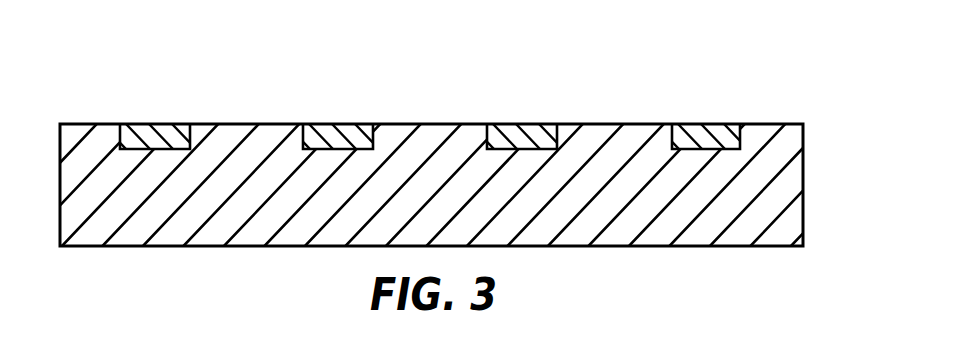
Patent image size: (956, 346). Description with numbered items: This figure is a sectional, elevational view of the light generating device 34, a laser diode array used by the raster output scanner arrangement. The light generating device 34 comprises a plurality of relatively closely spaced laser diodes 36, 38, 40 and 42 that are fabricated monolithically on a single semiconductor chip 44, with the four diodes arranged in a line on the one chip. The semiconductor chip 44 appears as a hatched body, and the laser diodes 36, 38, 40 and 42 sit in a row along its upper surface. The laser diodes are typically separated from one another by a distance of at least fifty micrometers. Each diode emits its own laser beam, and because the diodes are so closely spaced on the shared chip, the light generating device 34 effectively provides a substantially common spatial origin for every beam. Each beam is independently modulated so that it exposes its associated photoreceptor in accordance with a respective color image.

The light generating device 34 is at (483, 50).
The laser diode 36 is at (162, 123).
The laser diode 38 is at (345, 123).
The laser diode 40 is at (532, 123).
The laser diode 42 is at (707, 123).
The semiconductor chip 44 is at (803, 178).